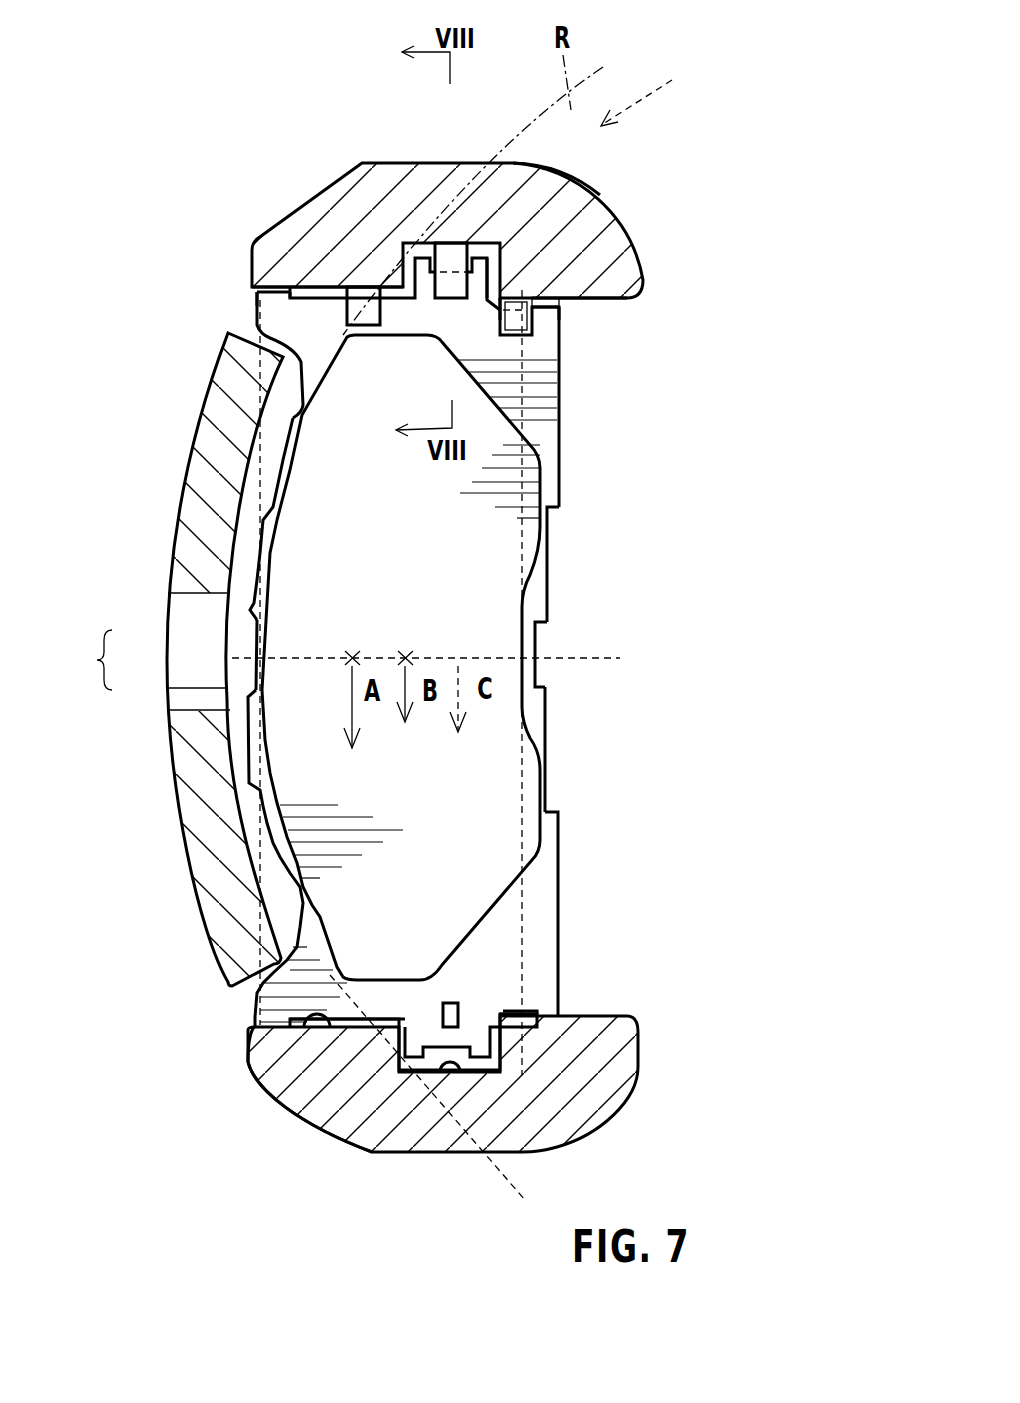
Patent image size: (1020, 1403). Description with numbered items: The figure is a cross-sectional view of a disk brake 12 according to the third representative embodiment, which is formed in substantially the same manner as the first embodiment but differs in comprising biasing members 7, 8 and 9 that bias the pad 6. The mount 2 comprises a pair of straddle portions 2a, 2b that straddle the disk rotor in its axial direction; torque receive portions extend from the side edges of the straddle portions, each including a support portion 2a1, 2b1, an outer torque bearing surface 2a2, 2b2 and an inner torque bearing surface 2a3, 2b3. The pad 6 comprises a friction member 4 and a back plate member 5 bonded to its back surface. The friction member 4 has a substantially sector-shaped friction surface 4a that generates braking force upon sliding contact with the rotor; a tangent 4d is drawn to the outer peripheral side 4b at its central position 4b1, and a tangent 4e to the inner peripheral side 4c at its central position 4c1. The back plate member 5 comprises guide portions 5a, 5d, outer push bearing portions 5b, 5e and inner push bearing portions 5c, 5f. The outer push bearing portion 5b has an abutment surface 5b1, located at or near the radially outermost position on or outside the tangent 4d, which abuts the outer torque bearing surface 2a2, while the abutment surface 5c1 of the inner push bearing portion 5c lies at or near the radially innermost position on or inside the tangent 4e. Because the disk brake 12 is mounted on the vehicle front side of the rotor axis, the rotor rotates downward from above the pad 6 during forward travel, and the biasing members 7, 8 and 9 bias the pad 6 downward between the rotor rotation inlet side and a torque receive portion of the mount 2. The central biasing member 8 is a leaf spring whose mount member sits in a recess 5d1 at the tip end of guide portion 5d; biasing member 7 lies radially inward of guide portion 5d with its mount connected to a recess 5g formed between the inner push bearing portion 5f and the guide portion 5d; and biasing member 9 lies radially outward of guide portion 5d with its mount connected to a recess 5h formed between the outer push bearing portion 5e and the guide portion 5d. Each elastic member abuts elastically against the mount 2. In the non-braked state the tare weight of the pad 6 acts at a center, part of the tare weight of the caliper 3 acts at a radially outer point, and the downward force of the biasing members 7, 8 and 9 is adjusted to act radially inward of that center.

The disk brake 12 is at (180, 176).
The mount 2 is at (356, 163).
The straddle portion 2a is at (372, 1130).
The support portion 2a1 is at (443, 1076).
The outer torque bearing surface 2a2 is at (313, 1028).
The inner torque bearing surface 2a3 is at (507, 1027).
The straddle portion 2b is at (330, 227).
The support portion 2b1 is at (500, 258).
The outer torque bearing surface 2b2 is at (303, 293).
The inner torque bearing surface 2b3 is at (562, 301).
The caliper 3 is at (205, 453).
The friction member 4 is at (262, 630).
The friction surface 4a is at (327, 837).
The outer peripheral side 4b is at (262, 530).
The central position 4b1 is at (247, 702).
The inner peripheral side 4c is at (530, 585).
The central position 4c1 is at (523, 657).
The tangent 4d is at (250, 440).
The tangent 4e is at (523, 873).
The back plate member 5 is at (257, 602).
The guide portion 5a is at (477, 1020).
The outer push bearing portion 5b is at (250, 1025).
The abutment surface 5b1 is at (258, 1060).
The inner push bearing portion 5c is at (545, 1016).
The abutment surface 5c1 is at (547, 1020).
The guide portion 5d is at (533, 407).
The recess 5d1 is at (503, 262).
The outer push bearing portion 5e is at (257, 293).
The inner push bearing portion 5f is at (562, 303).
The recess 5g is at (500, 297).
The recess 5h is at (290, 283).
The pad 6 is at (95, 660).
The biasing member 7 is at (513, 330).
The biasing member 8 is at (447, 250).
The biasing member 9 is at (350, 313).